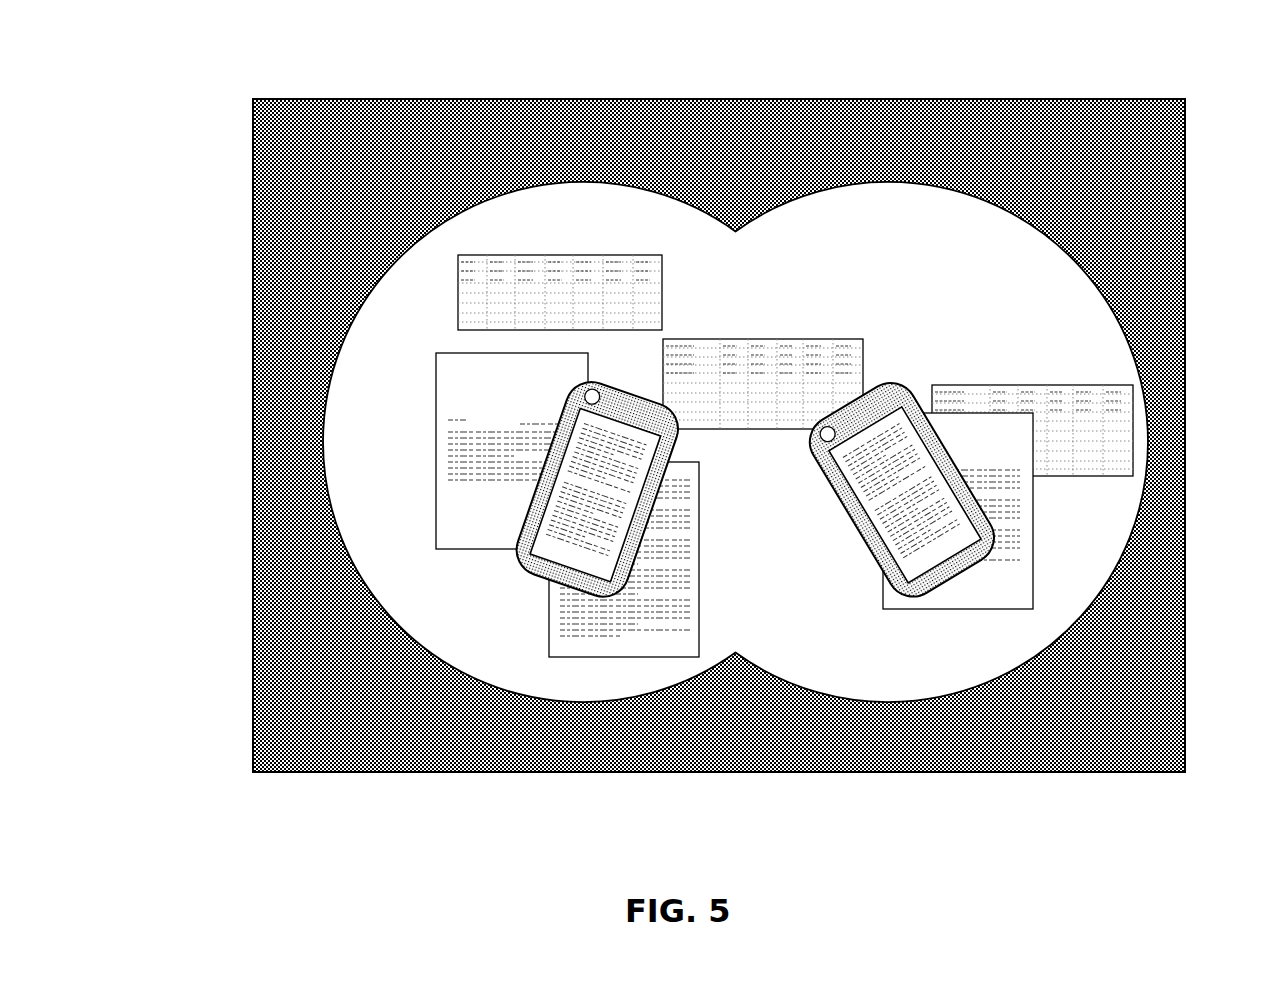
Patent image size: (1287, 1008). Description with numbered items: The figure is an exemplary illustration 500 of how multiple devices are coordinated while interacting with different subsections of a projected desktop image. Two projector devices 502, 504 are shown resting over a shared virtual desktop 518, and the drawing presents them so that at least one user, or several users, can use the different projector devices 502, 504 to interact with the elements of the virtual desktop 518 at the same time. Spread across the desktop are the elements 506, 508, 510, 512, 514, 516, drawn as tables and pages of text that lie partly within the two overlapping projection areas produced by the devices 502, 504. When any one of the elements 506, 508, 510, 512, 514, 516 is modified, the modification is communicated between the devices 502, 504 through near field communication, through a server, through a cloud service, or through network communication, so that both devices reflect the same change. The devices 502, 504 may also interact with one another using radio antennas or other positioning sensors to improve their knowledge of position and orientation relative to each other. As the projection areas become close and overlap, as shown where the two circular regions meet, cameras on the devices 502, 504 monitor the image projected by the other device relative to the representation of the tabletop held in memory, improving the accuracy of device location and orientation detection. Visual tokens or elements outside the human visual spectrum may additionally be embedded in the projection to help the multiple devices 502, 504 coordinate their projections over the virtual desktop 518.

The exemplary illustration 500 is at (126, 66).
The projector device 502 is at (537, 580).
The projector device 504 is at (922, 603).
The element 506 is at (457, 268).
The element 508 is at (440, 405).
The element 510 is at (700, 582).
The element 512 is at (868, 337).
The element 514 is at (1112, 385).
The element 516 is at (1013, 588).
The virtual desktop 518 is at (687, 203).